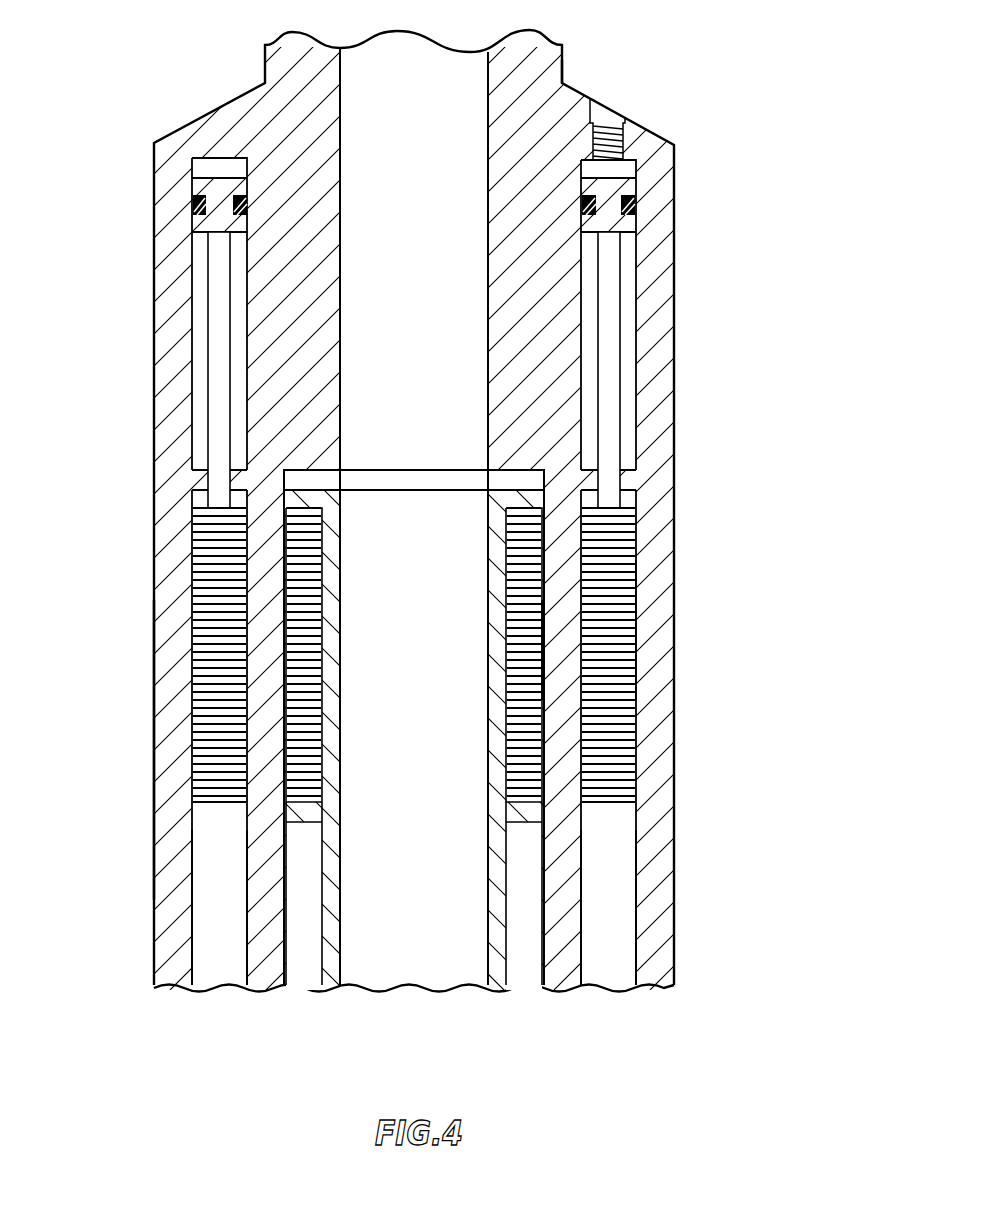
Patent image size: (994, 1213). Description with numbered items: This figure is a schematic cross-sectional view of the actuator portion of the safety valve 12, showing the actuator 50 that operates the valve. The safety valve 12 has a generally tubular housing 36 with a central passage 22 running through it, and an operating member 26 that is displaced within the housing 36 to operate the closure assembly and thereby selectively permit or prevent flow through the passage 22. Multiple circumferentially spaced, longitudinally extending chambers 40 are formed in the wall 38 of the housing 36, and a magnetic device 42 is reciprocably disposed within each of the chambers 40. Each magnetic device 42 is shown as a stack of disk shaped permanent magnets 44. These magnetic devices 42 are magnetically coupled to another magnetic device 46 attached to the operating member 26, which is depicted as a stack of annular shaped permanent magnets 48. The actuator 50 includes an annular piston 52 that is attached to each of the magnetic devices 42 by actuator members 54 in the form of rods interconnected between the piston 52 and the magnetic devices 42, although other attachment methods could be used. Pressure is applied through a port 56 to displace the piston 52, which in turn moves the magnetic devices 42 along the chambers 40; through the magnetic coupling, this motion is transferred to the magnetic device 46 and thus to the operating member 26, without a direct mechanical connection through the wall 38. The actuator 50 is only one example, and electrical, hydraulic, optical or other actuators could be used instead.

The safety valve 12 is at (749, 70).
The passage 22 is at (418, 965).
The operating member 26 is at (317, 966).
The housing 36 is at (156, 531).
The wall 38 is at (165, 777).
The chambers 40 is at (193, 903).
The magnetic device 42 is at (637, 610).
The disk shaped permanent magnets 44 is at (636, 537).
The magnetic device 46 is at (547, 651).
The annular shaped permanent magnets 48 is at (506, 660).
The actuator 50 is at (191, 203).
The annular piston 52 is at (638, 188).
The actuator members 54 is at (205, 390).
The port 56 is at (601, 123).